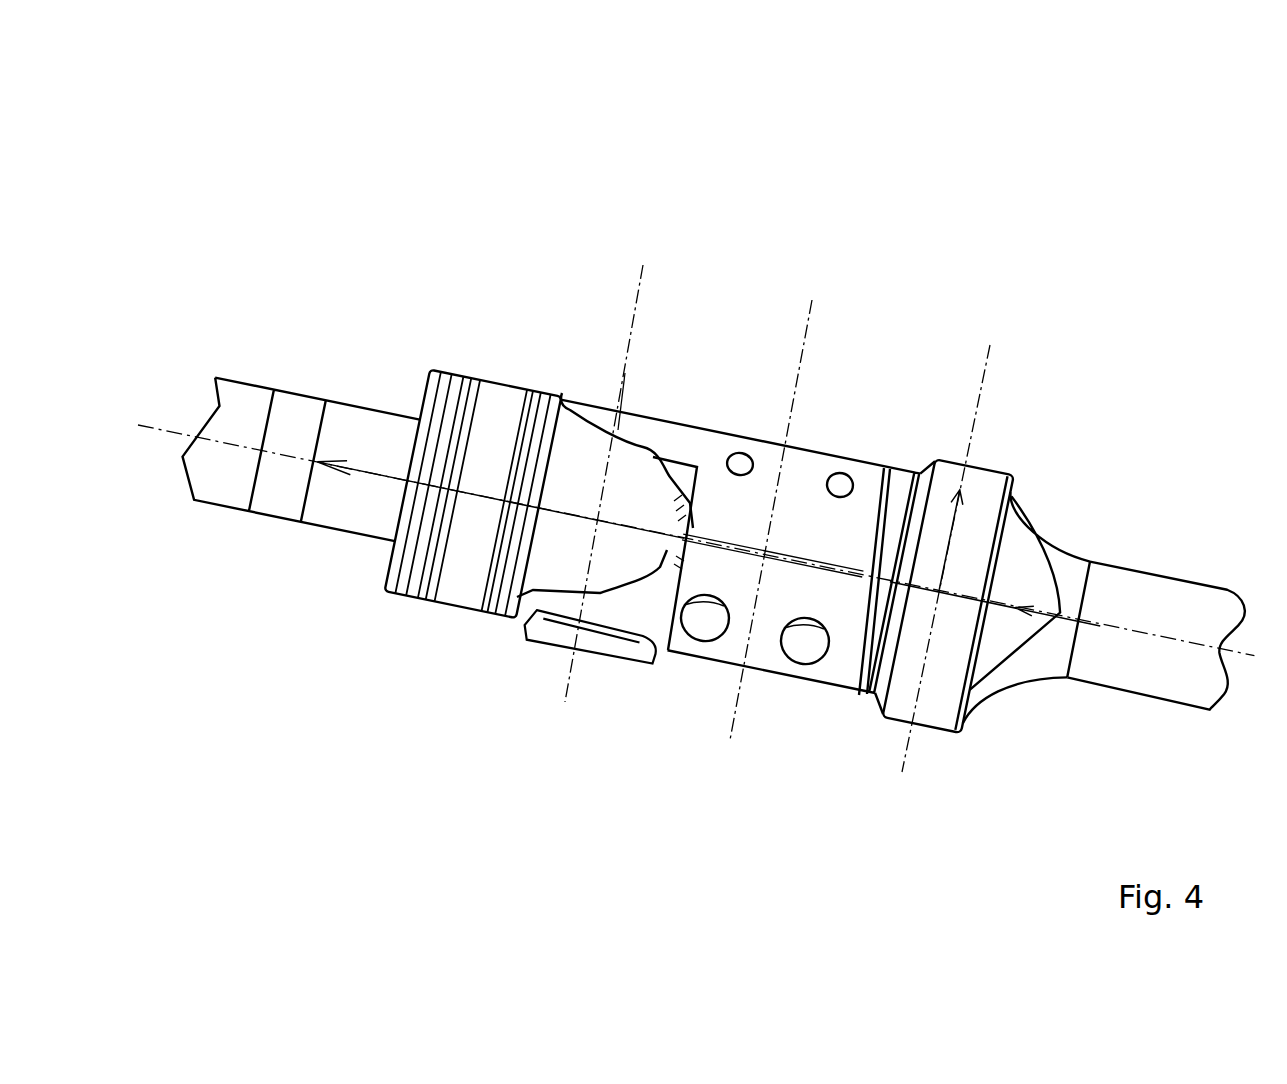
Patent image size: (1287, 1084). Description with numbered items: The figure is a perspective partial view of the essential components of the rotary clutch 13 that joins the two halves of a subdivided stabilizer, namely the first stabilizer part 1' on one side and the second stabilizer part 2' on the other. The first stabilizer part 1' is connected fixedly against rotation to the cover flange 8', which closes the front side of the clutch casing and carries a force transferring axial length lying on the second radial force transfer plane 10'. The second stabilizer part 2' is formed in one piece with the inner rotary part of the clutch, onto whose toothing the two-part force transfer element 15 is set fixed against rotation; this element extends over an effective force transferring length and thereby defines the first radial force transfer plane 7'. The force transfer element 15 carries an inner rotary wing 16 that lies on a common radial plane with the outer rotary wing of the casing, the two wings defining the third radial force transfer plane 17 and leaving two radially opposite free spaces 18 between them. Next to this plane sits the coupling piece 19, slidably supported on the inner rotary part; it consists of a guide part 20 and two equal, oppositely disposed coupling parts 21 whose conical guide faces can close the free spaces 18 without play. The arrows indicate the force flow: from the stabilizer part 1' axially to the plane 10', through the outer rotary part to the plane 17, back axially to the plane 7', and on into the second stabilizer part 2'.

The first stabilizer part 1' is at (1124, 607).
The second stabilizer part 2' is at (312, 380).
The first radial force transfer plane 7' is at (769, 561).
The cover flange 8' is at (1014, 483).
The second radial force transfer plane 10' is at (944, 582).
The rotary clutch 13 is at (1008, 148).
The force transfer element 15 is at (797, 460).
The inner rotary wing 16 is at (627, 420).
The third radial force transfer plane 17 is at (573, 715).
The free spaces 18 is at (645, 622).
The coupling piece 19 is at (570, 550).
The guide part 20 is at (497, 422).
The coupling parts 21 is at (620, 485).